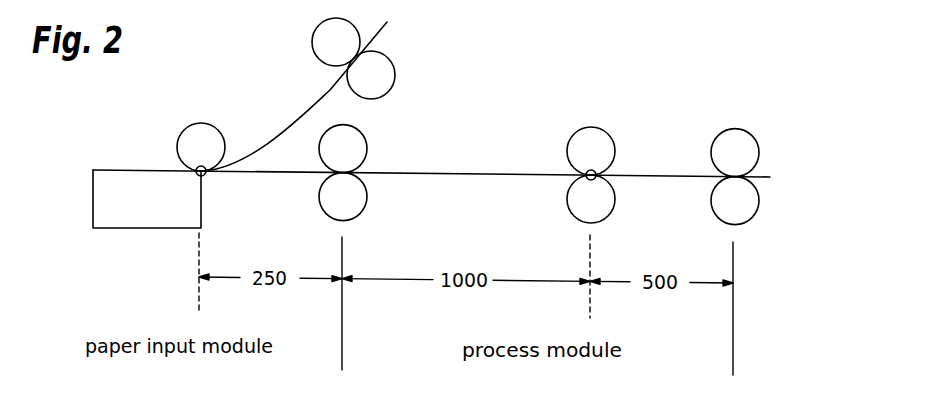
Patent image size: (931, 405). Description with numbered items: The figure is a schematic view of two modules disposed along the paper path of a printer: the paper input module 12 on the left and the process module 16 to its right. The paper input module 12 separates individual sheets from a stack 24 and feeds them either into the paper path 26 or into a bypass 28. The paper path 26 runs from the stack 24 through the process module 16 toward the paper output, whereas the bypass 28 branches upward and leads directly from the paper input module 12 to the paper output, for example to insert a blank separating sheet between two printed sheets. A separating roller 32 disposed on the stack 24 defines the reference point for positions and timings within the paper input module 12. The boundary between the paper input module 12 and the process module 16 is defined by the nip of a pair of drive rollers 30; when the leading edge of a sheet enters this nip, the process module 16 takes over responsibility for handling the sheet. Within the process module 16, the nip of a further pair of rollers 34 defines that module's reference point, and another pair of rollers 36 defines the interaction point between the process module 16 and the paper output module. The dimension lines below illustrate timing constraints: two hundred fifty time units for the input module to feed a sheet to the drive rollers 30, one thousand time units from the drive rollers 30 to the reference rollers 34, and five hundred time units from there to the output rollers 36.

The paper input module 12 is at (215, 95).
The process module 16 is at (512, 98).
The stack 24 is at (132, 205).
The paper path 26 is at (421, 171).
The bypass 28 is at (380, 34).
The pair of drive rollers 30 is at (368, 203).
The separating roller 32 is at (177, 147).
The pair of rollers 34 is at (598, 126).
The pair of rollers 36 is at (743, 128).